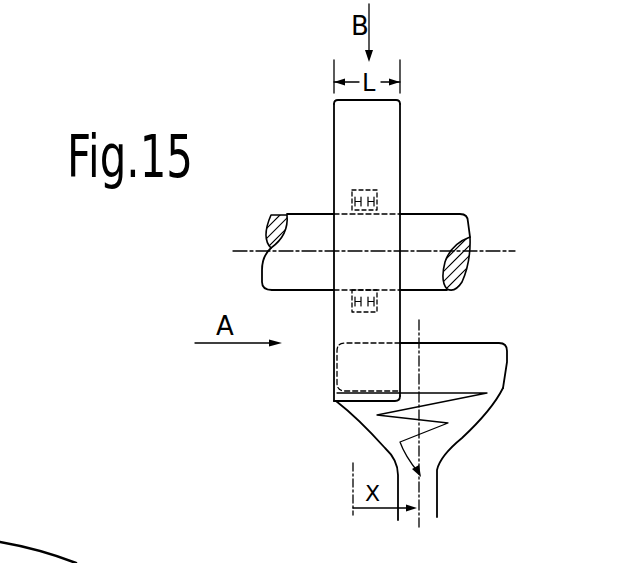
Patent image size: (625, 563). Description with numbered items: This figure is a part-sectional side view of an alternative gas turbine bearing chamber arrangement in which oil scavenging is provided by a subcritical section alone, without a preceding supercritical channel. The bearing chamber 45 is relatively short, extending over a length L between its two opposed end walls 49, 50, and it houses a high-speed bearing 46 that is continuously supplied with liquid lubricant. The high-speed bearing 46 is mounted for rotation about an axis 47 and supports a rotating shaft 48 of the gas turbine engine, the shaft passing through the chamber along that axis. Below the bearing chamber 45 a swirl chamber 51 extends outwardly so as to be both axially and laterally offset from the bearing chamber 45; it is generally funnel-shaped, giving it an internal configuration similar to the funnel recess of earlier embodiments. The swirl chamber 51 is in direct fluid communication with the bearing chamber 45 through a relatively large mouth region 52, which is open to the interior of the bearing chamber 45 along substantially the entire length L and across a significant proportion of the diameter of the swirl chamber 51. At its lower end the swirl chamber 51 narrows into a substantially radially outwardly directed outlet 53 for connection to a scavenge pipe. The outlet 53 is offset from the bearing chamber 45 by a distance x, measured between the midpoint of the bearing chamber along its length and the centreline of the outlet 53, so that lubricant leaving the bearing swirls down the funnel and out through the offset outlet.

The bearing chamber 45 is at (404, 105).
The high-speed bearing 46 is at (352, 192).
The axis 47 is at (488, 250).
The rotating shaft 48 is at (423, 280).
The end wall 49 is at (335, 143).
The end wall 50 is at (402, 178).
The swirl chamber 51 is at (490, 403).
The mouth region 52 is at (345, 372).
The outlet 53 is at (420, 510).